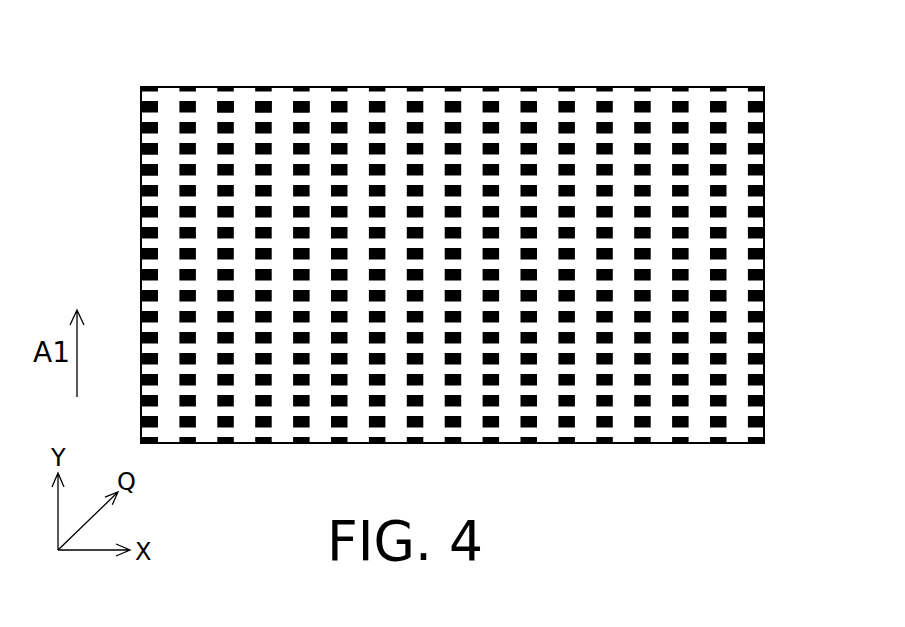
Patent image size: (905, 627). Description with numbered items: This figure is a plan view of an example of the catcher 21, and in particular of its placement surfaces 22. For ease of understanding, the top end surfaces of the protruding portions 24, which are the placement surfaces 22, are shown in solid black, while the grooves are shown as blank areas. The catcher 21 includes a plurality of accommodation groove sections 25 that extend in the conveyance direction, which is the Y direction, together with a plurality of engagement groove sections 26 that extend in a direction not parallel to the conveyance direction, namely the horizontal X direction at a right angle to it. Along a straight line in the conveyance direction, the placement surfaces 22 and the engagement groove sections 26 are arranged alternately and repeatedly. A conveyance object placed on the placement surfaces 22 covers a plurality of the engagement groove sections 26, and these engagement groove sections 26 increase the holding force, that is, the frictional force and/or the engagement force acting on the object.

The catcher 21 is at (745, 70).
The placement surfaces 22 is at (453, 234).
The protruding portions 24 is at (213, 106).
The accommodation groove sections 25 is at (322, 98).
The engagement groove sections 26 is at (150, 160).